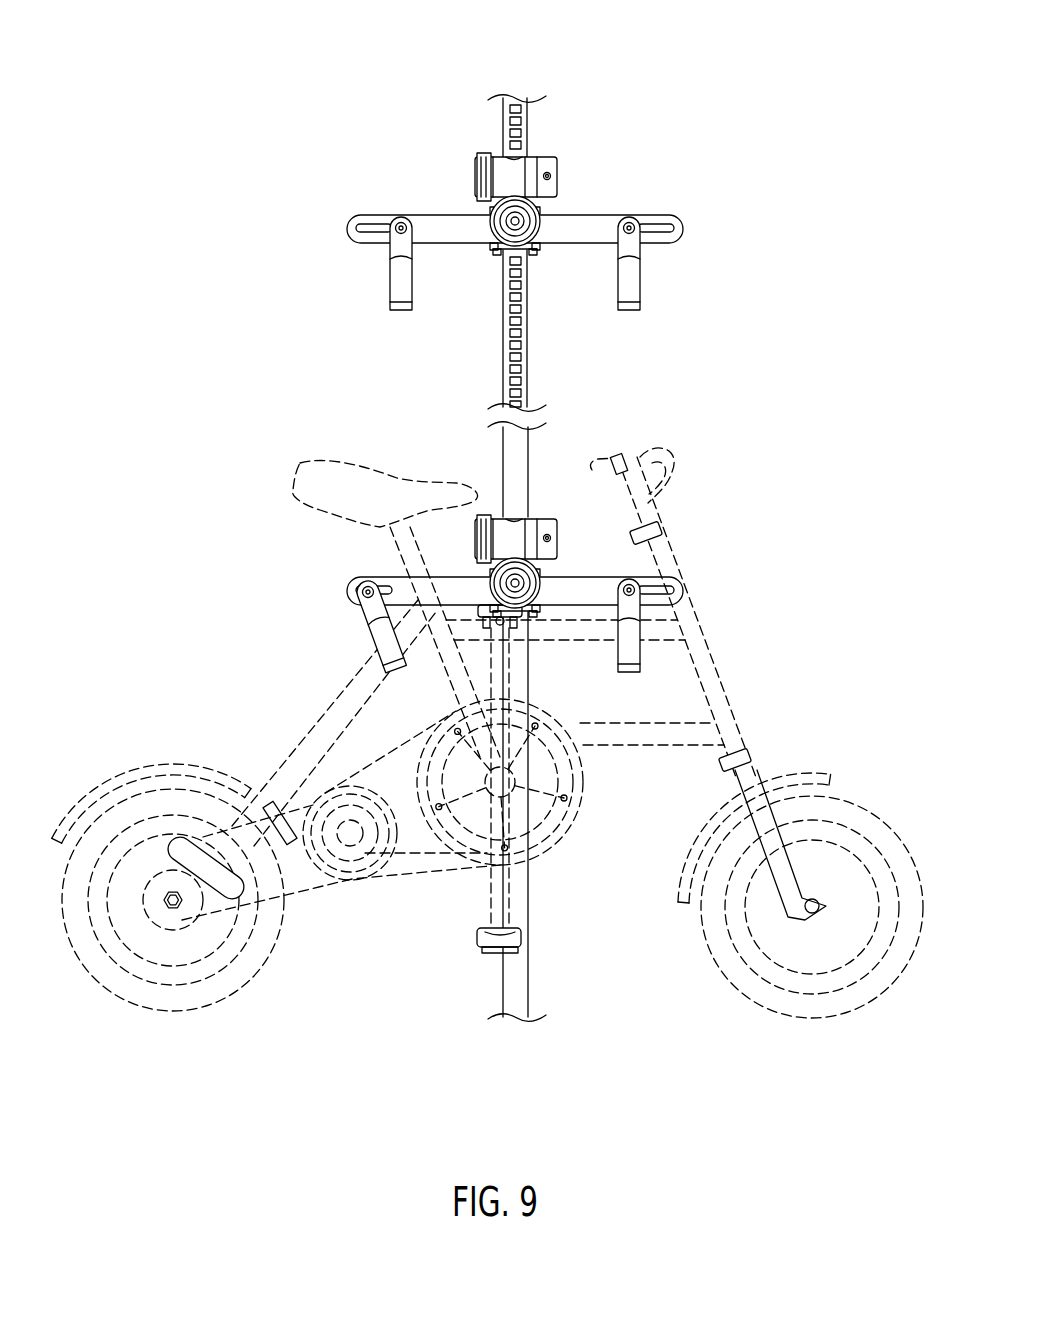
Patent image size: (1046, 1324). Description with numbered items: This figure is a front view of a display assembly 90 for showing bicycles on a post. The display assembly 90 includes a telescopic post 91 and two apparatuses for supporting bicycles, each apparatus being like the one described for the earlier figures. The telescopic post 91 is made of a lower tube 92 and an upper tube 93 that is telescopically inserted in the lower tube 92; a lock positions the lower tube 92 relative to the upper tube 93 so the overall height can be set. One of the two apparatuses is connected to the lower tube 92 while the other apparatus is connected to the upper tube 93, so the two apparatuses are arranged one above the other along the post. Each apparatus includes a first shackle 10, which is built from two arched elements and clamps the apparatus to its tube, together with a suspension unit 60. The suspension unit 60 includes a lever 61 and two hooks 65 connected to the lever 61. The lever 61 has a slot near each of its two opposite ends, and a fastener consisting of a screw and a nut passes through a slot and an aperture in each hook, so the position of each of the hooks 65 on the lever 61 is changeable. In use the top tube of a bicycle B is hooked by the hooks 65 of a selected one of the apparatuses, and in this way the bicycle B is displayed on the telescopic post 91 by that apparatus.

The display assembly 90 is at (568, 101).
The first shackle 10 is at (462, 161).
The suspension unit 60 is at (690, 141).
The lever 61 is at (593, 222).
The hooks 65 is at (631, 243).
The telescopic post 91 is at (612, 338).
The lower tube 92 is at (514, 466).
The upper tube 93 is at (522, 356).
The bicycle B is at (708, 698).